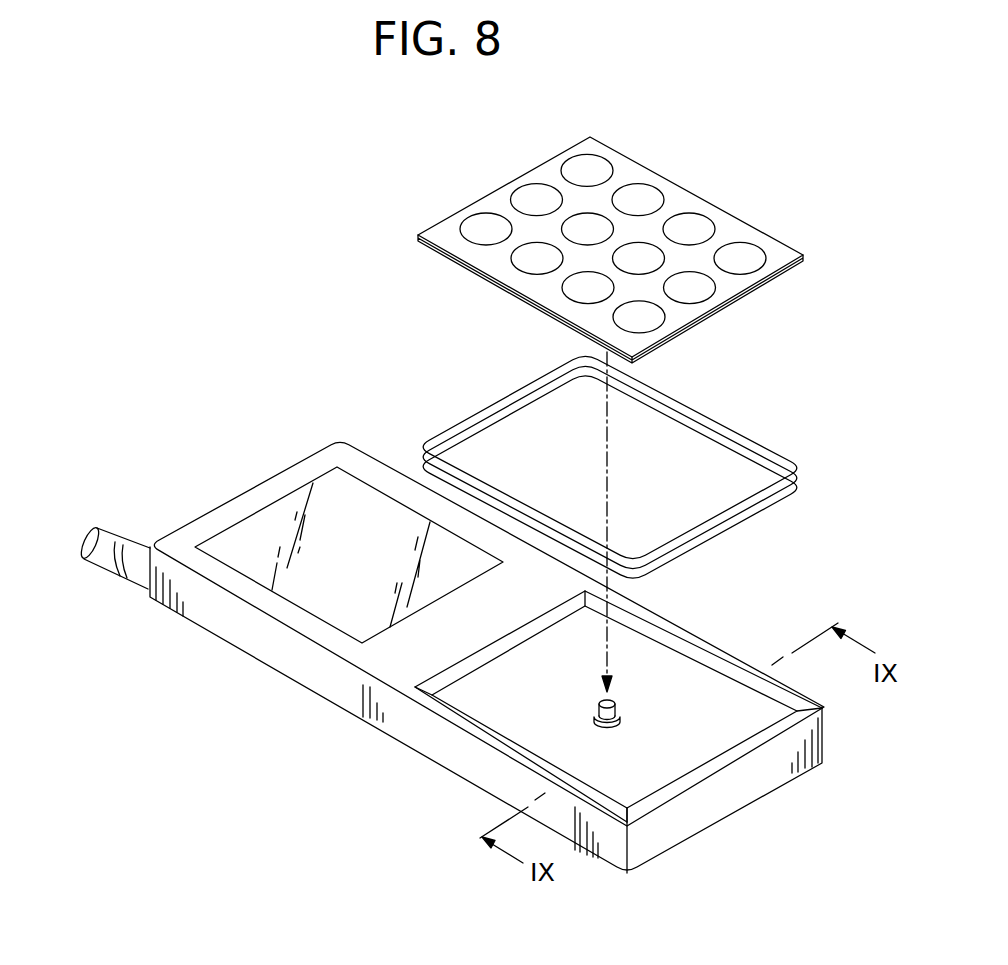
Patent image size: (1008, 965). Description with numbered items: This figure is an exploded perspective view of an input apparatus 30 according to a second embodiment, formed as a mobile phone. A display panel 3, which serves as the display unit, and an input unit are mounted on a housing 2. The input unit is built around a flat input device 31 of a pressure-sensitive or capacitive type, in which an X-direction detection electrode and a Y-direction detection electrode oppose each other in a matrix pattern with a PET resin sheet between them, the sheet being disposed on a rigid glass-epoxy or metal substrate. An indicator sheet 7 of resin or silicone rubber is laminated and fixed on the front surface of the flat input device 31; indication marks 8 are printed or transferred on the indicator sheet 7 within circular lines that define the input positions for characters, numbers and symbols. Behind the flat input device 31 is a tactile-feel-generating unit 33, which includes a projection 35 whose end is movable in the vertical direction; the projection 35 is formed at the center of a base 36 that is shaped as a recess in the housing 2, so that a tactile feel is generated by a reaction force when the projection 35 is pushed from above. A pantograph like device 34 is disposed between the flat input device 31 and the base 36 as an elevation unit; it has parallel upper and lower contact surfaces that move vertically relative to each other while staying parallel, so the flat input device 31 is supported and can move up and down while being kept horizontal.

The housing 2 is at (257, 647).
The display panel 3 is at (273, 527).
The indicator sheet 7 is at (737, 282).
The indication marks 8 is at (594, 154).
The input apparatus 30 is at (311, 393).
The flat input device 31 is at (667, 338).
The tactile-feel-generating unit 33 is at (692, 731).
The pantograph like device 34 is at (778, 504).
The projection 35 is at (613, 698).
The base 36 is at (690, 677).